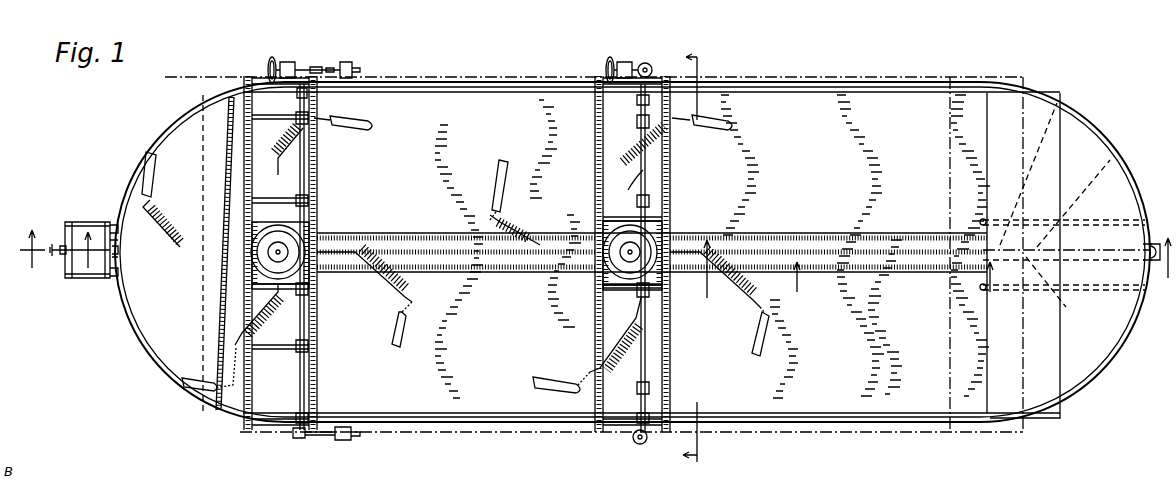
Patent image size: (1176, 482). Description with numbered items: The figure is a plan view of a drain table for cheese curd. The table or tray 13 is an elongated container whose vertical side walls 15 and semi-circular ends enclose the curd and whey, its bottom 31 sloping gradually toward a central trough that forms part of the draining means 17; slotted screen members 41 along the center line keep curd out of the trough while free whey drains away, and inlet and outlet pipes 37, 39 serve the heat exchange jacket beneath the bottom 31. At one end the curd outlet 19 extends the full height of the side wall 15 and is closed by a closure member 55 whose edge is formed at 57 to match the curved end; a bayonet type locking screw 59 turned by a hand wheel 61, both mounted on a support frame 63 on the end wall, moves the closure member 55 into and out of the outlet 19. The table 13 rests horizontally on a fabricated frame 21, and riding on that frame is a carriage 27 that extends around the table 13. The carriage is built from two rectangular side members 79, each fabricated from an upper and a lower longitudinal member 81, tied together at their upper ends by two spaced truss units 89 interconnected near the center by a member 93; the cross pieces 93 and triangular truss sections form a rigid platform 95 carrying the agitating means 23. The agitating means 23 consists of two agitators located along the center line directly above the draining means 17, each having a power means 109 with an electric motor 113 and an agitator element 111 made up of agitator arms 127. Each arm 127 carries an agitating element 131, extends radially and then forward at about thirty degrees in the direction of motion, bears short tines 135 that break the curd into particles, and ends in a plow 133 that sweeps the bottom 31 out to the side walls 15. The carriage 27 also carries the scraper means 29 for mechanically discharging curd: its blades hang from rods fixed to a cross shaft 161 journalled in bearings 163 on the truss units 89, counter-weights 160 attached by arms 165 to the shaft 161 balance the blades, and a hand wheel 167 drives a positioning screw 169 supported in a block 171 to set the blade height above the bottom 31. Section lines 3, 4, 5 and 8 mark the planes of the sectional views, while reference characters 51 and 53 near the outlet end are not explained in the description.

The table or tray 13 is at (796, 108).
The side walls 15 is at (175, 133).
The draining means 17 is at (421, 233).
The curd outlet 19 is at (103, 222).
The frame 21 is at (1065, 84).
The agitating means 23 is at (290, 234).
The carriage or bridge structure 27 is at (316, 372).
The scraper means 29 is at (228, 151).
The bottom 31 is at (462, 100).
The inlet pipe 37 is at (1128, 221).
The outlet pipe 39 is at (1088, 293).
The slotted screen members 41 is at (379, 234).
The center line 51 is at (1076, 247).
The end fitting 53 is at (1160, 240).
The closure member 55 is at (119, 242).
The machined conforming portion 57 is at (120, 267).
The bayonet type locking screw 59 is at (55, 244).
The hand wheel 61 is at (55, 259).
The support frame 63 is at (82, 222).
The rectangular side members 79 is at (516, 78).
The longitudinal members 81 is at (426, 81).
The truss units 89 is at (316, 393).
The cross pieces 93 is at (252, 223).
The rigid platform 95 is at (252, 279).
The power means 109 is at (290, 251).
The agitator element 111 is at (379, 293).
The electric motor 113 is at (283, 244).
The agitator arms 127 is at (322, 263).
The agitating element 131 is at (271, 139).
The plow 133 is at (356, 124).
The tines or rods 135 is at (488, 221).
The counter-weights 160 is at (347, 60).
The cross shaft 161 is at (306, 353).
The bearings 163 is at (297, 93).
The arm 165 is at (320, 438).
The hand wheel 167 is at (266, 68).
The positioning screw 169 is at (302, 66).
The block 171 is at (284, 62).
The section line 3 is at (692, 258).
The section line 4 is at (587, 264).
The section line 5 is at (399, 270).
The section line 8 is at (898, 291).